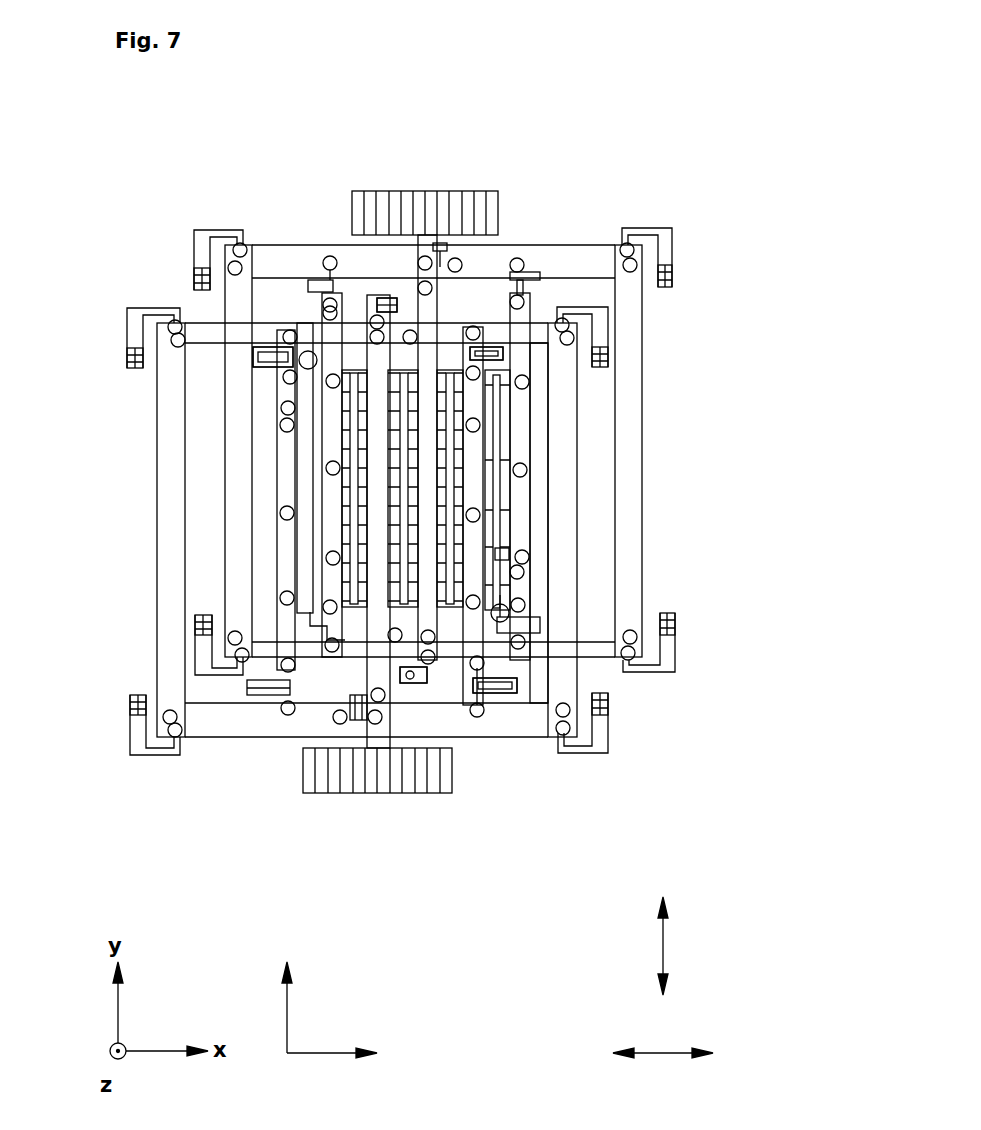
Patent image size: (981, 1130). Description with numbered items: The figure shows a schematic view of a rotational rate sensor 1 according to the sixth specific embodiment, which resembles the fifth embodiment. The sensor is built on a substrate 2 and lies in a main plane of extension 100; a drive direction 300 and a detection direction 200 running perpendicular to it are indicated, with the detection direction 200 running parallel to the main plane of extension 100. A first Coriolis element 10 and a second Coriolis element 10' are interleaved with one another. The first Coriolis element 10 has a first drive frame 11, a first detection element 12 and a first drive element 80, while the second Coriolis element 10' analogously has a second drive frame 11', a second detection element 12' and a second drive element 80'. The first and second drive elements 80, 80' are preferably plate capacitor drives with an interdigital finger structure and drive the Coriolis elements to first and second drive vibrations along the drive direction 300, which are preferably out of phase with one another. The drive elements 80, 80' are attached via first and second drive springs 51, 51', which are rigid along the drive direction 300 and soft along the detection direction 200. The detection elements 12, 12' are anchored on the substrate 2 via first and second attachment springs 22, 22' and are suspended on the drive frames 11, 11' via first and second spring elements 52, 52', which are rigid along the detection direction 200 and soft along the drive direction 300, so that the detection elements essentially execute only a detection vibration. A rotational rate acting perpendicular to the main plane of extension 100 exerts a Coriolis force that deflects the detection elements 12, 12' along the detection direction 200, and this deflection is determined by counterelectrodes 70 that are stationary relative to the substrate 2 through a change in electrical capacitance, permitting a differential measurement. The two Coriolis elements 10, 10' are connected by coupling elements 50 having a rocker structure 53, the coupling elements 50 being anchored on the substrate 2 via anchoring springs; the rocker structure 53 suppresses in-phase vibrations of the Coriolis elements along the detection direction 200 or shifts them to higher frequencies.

The rotational rate sensor 1 is at (735, 152).
The substrate 2 is at (705, 850).
The first Coriolis element 10 is at (313, 530).
The second Coriolis element 10' is at (488, 451).
The first drive frame 11 is at (127, 530).
The second drive frame 11' is at (678, 451).
The first detection element 12 is at (182, 500).
The second detection element 12' is at (625, 476).
The first attachment springs 22 is at (394, 531).
The second attachment springs 22' is at (438, 451).
The coupling elements 50 is at (383, 297).
The rocker structure 53 is at (383, 297).
The first drive springs 51 is at (310, 756).
The second drive springs 51' is at (493, 204).
The first spring elements 52 is at (249, 749).
The second spring elements 52' is at (556, 218).
The counterelectrodes 70 is at (500, 555).
The first drive element 80 is at (377, 578).
The second drive element 80' is at (425, 379).
The main plane of extension 100 is at (329, 1010).
The detection direction 200 is at (663, 1071).
The drive direction 300 is at (691, 946).